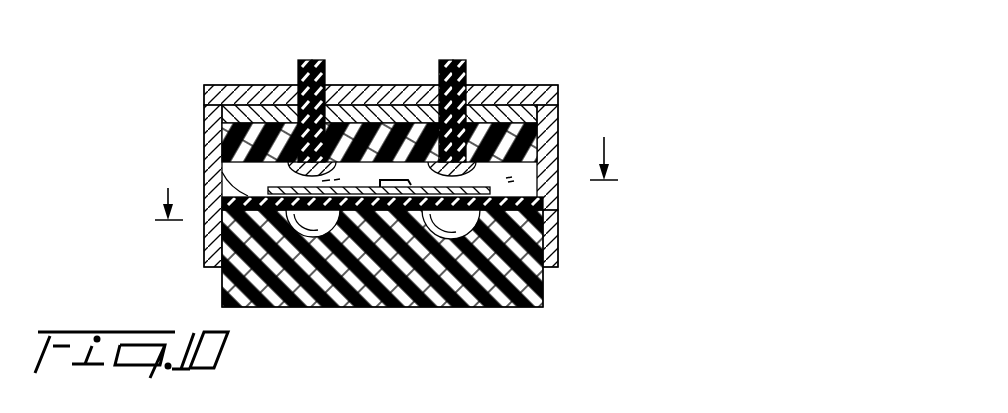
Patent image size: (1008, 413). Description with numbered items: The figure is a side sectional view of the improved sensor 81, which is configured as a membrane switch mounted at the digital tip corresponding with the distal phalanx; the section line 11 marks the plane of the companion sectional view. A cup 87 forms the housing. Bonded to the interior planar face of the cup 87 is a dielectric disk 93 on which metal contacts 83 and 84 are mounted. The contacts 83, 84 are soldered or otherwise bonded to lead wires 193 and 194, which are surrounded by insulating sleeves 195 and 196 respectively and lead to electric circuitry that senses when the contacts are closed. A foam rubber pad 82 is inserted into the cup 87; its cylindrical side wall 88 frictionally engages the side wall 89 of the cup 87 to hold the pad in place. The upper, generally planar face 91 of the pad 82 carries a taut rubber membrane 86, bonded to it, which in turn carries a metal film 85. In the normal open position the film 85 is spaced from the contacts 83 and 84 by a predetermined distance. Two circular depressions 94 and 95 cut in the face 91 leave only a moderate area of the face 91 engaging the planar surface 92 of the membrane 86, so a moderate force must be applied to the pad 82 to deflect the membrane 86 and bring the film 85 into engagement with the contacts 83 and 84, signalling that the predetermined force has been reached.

The sensor 81 is at (451, 151).
The foam rubber pad 82 is at (505, 306).
The metal contact 83 is at (262, 155).
The metal contact 84 is at (520, 120).
The metal film 85 is at (268, 189).
The rubber membrane 86 is at (262, 198).
The cup 87 is at (552, 131).
The cylindrical side wall 88 is at (545, 300).
The side wall 89 is at (558, 242).
The upper planar face 91 is at (208, 259).
The planar surface 92 is at (548, 198).
The dielectric disk 93 is at (546, 92).
The circular depression 94 is at (313, 238).
The circular depression 95 is at (432, 248).
The lead wire 193 is at (308, 62).
The lead wire 194 is at (448, 62).
The insulating sleeve 195 is at (325, 72).
The insulating sleeve 196 is at (463, 72).
The section line 11 is at (386, 194).